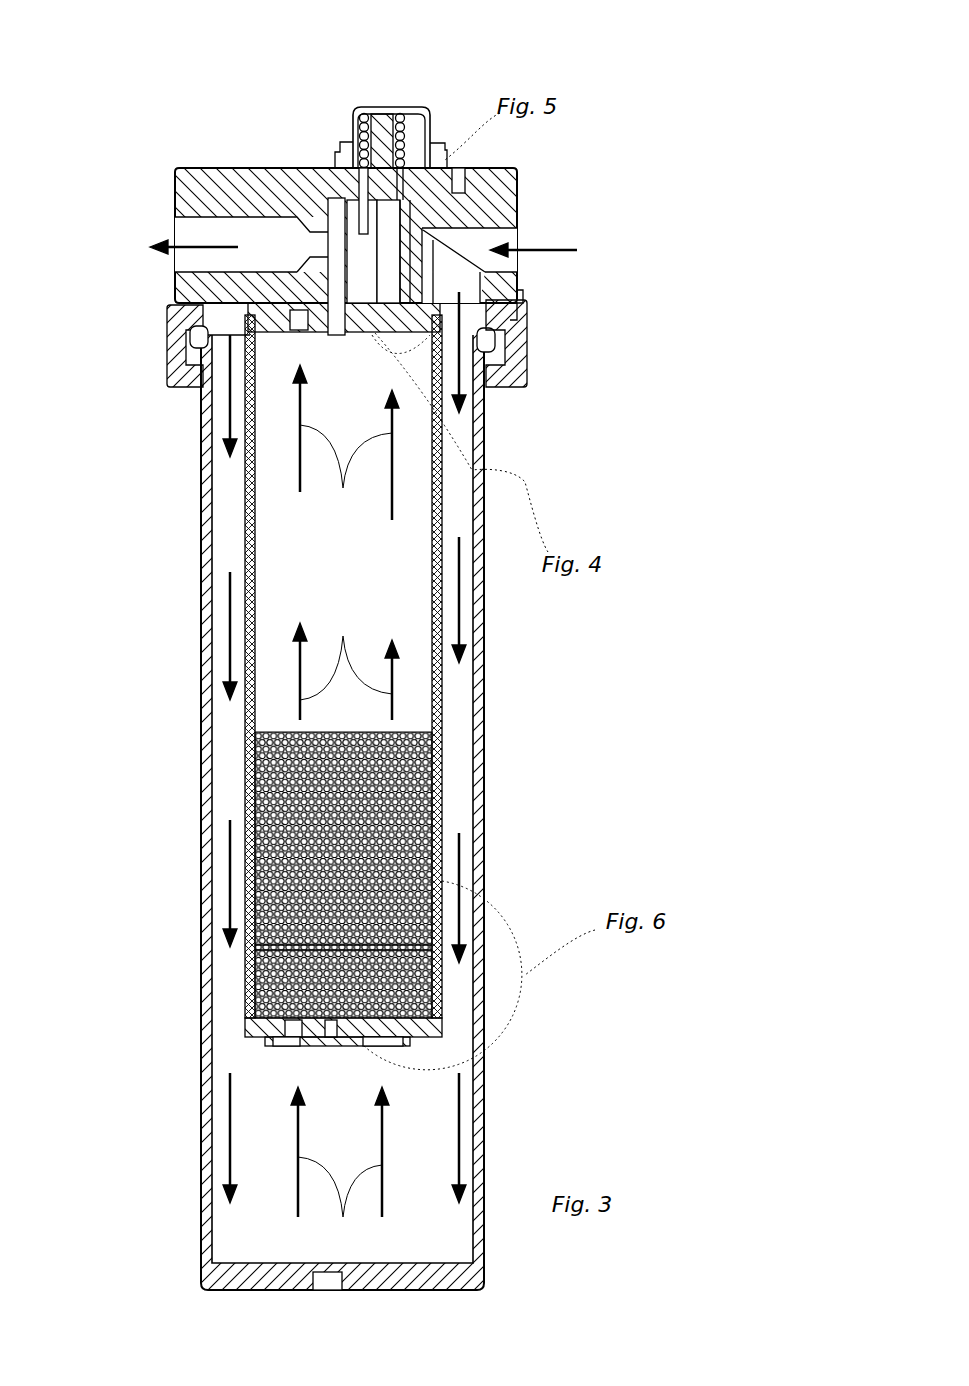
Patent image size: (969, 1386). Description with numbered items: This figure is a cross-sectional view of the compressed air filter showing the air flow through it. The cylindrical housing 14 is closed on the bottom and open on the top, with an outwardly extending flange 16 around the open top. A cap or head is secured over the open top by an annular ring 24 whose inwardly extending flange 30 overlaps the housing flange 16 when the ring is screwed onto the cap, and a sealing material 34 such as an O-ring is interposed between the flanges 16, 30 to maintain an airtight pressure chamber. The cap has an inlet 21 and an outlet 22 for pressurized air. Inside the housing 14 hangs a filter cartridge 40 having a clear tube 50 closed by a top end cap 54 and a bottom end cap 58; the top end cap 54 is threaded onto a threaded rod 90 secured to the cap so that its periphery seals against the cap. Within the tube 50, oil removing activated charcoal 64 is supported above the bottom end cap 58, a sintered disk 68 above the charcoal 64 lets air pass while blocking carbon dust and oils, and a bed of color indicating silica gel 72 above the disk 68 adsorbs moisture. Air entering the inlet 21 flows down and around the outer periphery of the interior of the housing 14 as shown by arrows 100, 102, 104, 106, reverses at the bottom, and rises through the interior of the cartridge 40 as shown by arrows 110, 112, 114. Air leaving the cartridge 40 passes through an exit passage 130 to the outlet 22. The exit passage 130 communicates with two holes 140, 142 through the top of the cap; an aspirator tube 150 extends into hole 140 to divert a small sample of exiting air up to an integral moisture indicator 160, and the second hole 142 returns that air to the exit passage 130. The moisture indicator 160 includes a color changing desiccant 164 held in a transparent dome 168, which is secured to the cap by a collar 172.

The housing 14 is at (484, 700).
The flange 16 is at (515, 340).
The inlet 21 is at (522, 280).
The outlet 22 is at (245, 259).
The annular ring 24 is at (530, 330).
The inwardly extending flange 30 is at (487, 347).
The sealing material 34 is at (170, 340).
The filter cartridge 40 is at (237, 508).
The tube 50 is at (246, 560).
The top end cap 54 is at (192, 348).
The bottom end cap 58 is at (405, 1062).
The activated charcoal 64 is at (245, 1010).
The sintered disk 68 is at (245, 950).
The silica gel 72 is at (250, 790).
The threaded rod 90 is at (361, 283).
The arrows 100 is at (550, 249).
The arrows 102 is at (226, 428).
The arrows 104 is at (213, 632).
The arrows 106 is at (213, 885).
The arrows 110 is at (340, 1168).
The arrows 112 is at (346, 666).
The arrows 114 is at (346, 442).
The exit passage 130 is at (283, 294).
The hole 140 is at (340, 166).
The second hole 142 is at (520, 180).
The aspirator tube 150 is at (363, 236).
The moisture indicator 160 is at (369, 122).
The color changing desiccant 164 is at (426, 140).
The dome 168 is at (357, 113).
The collar 172 is at (345, 150).